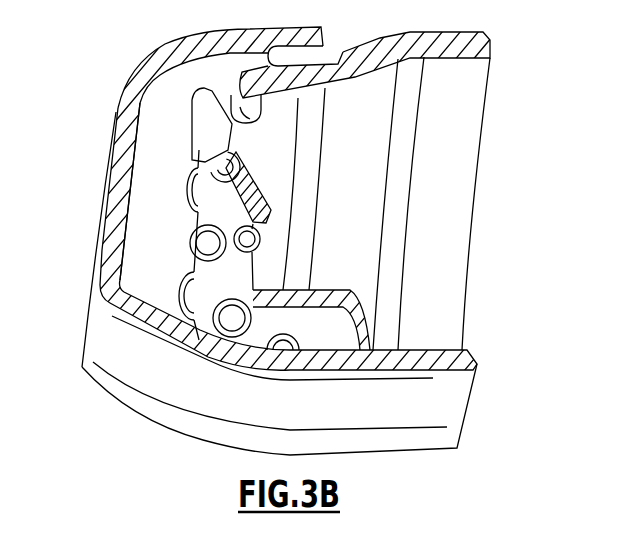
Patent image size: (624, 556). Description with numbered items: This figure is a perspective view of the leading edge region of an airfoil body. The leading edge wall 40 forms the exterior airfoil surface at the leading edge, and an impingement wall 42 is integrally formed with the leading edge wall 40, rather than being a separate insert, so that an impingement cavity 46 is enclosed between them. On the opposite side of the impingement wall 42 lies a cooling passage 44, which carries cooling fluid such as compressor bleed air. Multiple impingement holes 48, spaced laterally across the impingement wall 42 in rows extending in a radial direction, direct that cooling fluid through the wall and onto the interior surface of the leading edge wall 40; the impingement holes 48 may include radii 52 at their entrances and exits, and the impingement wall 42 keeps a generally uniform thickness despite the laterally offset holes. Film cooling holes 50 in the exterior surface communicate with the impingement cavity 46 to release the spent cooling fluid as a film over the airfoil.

The leading edge wall 40 is at (133, 73).
The impingement wall 42 is at (263, 193).
The cooling passage 44 is at (465, 135).
The impingement cavity 46 is at (181, 111).
The impingement holes 48 is at (243, 156).
The film cooling holes 50 is at (306, 55).
The radii 52 is at (258, 110).